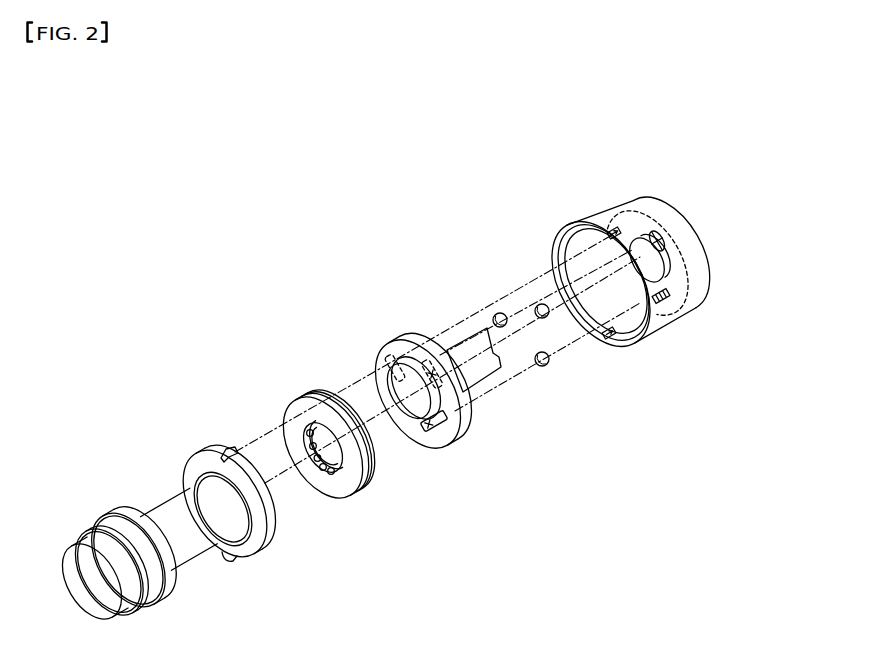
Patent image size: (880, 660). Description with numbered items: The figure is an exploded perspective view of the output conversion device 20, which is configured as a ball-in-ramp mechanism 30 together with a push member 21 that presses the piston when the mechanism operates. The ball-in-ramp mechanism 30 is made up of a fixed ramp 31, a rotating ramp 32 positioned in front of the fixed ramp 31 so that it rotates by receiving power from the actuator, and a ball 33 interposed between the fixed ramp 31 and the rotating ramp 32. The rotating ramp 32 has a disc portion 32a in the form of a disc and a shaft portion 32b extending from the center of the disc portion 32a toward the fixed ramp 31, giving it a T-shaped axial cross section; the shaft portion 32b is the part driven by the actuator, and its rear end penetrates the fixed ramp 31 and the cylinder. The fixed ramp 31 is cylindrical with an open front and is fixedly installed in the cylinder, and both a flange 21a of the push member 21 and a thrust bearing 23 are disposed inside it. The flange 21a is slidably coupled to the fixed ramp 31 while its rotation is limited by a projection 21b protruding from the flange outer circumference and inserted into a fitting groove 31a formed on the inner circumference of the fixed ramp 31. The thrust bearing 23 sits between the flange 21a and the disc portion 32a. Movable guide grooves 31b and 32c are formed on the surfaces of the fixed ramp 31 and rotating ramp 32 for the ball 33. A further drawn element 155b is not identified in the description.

The output conversion device 20 is at (394, 198).
The push member 21 is at (172, 521).
The flange 21a is at (230, 507).
The projection 21b is at (227, 450).
The thrust bearing 23 is at (341, 493).
The ball-in-ramp mechanism 30 is at (637, 327).
The fixed ramp 31 is at (637, 288).
The fitting groove 31a is at (609, 338).
The movable guide groove 31b is at (665, 304).
The rotating ramp 32 is at (423, 381).
The disc portion 32a is at (408, 342).
The shaft portion 32b is at (462, 352).
The movable guide groove 32c is at (432, 430).
The ball 33 is at (542, 366).
The plate 155b is at (461, 412).